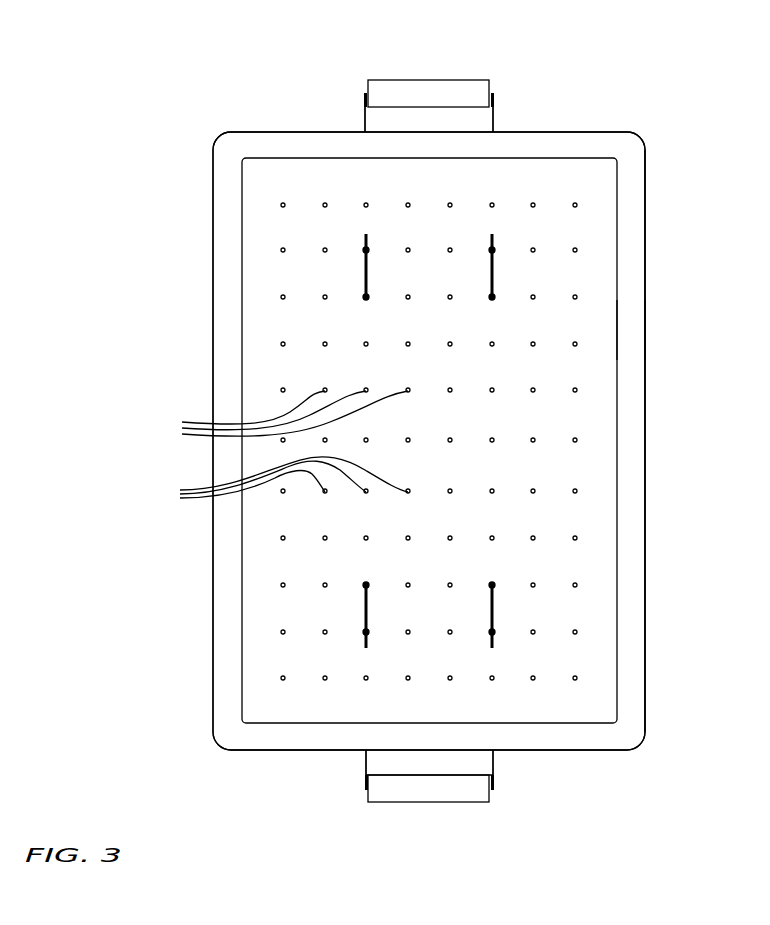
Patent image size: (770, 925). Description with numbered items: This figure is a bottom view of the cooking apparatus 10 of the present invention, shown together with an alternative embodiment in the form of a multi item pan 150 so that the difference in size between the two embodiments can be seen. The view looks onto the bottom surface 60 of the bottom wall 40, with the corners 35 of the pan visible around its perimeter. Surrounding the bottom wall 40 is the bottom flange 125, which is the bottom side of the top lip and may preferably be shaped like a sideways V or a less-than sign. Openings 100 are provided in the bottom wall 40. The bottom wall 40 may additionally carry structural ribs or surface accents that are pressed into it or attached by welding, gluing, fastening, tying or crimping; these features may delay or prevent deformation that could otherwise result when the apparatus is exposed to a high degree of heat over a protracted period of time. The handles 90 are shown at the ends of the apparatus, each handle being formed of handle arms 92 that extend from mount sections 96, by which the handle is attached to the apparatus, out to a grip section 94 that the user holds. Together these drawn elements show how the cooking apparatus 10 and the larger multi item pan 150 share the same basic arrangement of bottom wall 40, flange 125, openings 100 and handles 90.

The cooking apparatus 10 is at (88, 79).
The corners 35 is at (228, 142).
The bottom wall 40 is at (252, 364).
The bottom surface 60 is at (266, 233).
The handles 90 is at (399, 87).
The handle arms 92 is at (365, 108).
The grip sections 94 is at (455, 95).
The mount sections 96 is at (366, 258).
The openings 100 is at (279, 449).
The bottom flange 125 is at (630, 333).
The multi item pan 150 is at (652, 594).